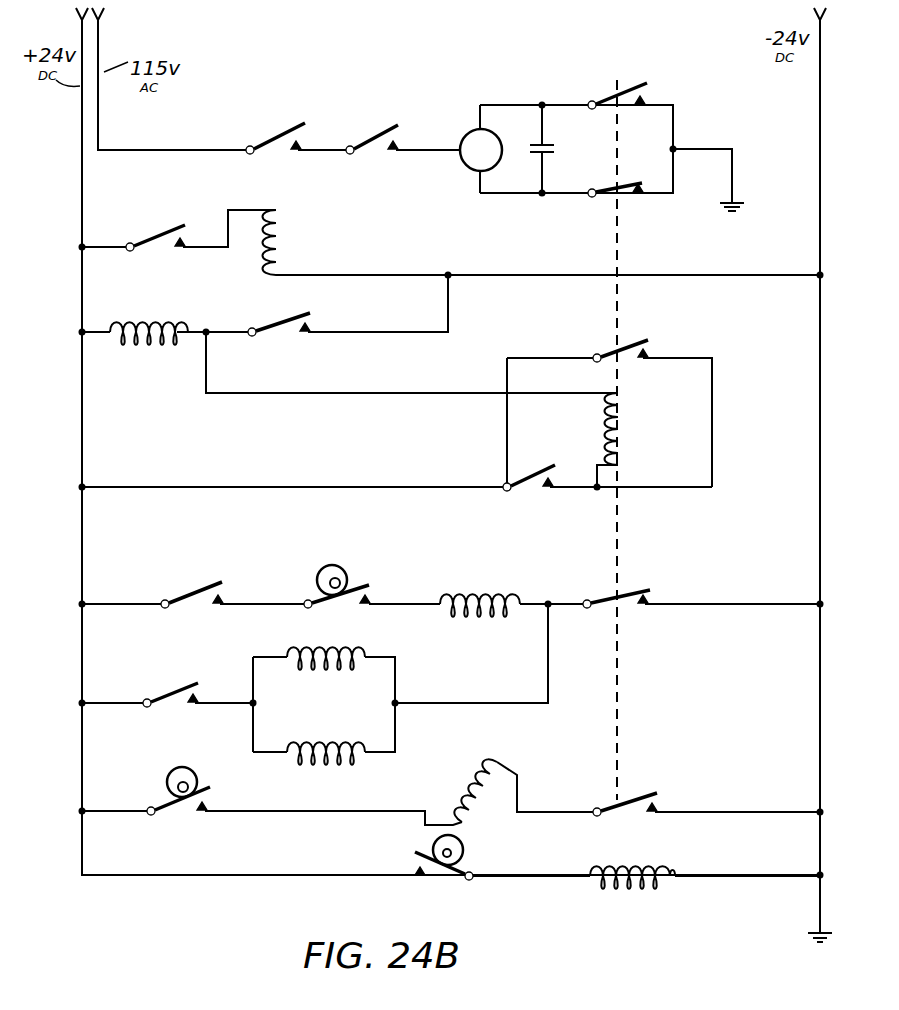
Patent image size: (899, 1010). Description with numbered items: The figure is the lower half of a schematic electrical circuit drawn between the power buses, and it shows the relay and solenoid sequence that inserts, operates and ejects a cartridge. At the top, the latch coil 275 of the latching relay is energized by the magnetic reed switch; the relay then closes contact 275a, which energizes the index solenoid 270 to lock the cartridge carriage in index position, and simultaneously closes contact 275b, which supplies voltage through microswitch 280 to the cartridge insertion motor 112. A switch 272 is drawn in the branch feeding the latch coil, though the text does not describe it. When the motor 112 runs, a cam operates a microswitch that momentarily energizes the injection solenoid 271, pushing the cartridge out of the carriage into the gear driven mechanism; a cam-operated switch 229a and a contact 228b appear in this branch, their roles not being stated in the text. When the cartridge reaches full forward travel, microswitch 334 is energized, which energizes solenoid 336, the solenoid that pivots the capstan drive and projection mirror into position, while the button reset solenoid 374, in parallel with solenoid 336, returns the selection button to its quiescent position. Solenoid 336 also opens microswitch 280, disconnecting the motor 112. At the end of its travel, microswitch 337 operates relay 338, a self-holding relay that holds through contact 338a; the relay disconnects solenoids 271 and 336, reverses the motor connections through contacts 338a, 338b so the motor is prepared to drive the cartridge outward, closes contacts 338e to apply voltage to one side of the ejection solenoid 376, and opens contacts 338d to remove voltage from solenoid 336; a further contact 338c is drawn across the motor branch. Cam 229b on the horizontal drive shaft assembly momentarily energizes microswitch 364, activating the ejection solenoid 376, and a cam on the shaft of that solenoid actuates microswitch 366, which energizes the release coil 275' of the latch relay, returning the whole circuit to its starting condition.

The cartridge insertion motor 112 is at (465, 126).
The switch contact 228b is at (184, 596).
The cam operated switch 229a is at (345, 575).
The cam 229b is at (168, 783).
The index solenoid 270 is at (143, 304).
The injection solenoid 271 is at (493, 578).
The switch 272 is at (152, 240).
The latch coil of latching relay 275 is at (305, 240).
The latching relay contact 275a is at (288, 322).
The latching relay contact 275b is at (270, 128).
The relay coil 275' is at (632, 867).
The microswitch 280 is at (369, 136).
The microswitch 334 is at (168, 698).
The capstan and mirror set solenoid 336 is at (292, 662).
The microswitch 337 is at (536, 482).
The relay 338 is at (628, 425).
The relay contact 338a is at (625, 343).
The relay contact 338b is at (619, 98).
The relay contact 338c is at (612, 190).
The relay contacts 338d is at (640, 598).
The relay contacts 338e is at (640, 795).
The microswitch 364 is at (168, 815).
The microswitch 366 is at (457, 872).
The button reset solenoid 374 is at (322, 740).
The ejection solenoid 376 is at (468, 791).